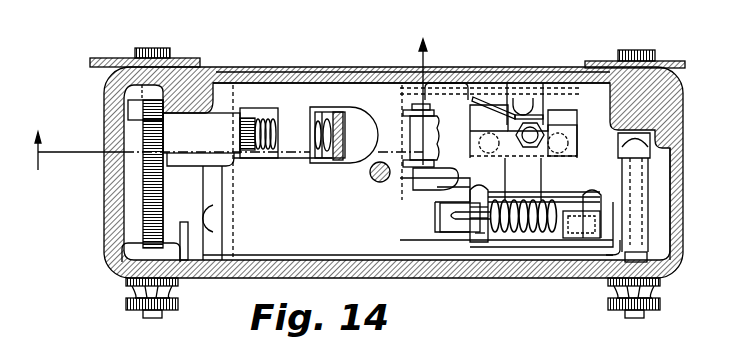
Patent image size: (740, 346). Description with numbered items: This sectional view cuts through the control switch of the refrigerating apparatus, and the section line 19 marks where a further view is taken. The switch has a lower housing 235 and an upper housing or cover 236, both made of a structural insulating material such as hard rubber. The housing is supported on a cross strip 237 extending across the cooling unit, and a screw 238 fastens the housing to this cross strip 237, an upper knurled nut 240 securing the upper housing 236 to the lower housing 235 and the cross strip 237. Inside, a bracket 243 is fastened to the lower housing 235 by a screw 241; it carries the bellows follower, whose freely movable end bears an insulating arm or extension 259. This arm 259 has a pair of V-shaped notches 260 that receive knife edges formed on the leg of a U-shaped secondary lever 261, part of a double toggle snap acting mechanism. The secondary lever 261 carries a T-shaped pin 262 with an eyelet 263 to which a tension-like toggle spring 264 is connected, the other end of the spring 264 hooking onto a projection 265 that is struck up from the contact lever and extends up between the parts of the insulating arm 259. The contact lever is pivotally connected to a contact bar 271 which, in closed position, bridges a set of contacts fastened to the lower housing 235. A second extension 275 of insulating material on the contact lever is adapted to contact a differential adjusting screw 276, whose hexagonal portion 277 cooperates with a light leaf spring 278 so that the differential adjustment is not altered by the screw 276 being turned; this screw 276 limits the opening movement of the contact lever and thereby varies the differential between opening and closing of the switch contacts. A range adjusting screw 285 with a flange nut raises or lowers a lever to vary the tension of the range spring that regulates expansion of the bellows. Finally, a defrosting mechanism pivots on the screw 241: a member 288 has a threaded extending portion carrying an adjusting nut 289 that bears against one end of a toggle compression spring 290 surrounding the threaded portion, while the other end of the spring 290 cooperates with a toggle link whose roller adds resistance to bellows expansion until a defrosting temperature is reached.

The section line 19- 19 is at (235, 92).
The lower housing 235 is at (683, 117).
The upper housing or cover 236 is at (683, 210).
The cross strip 237 is at (128, 58).
The screw 238 is at (147, 203).
The upper knurled nut 240 is at (125, 303).
The screw 241 is at (188, 172).
The bracket 243 is at (265, 93).
The insulating arm 259 is at (426, 240).
The V-shaped notches 260 is at (480, 235).
The U-shaped secondary lever 261 is at (567, 192).
The T-shaped pin 262 is at (605, 207).
The eyelet 263 is at (590, 205).
The toggle spring 264 is at (530, 227).
The projection 265 is at (453, 215).
The contact bar 271 is at (572, 133).
The second extension 275 is at (518, 168).
The differential adjusting screw 276 is at (532, 130).
The hexagonal portion 277 is at (527, 123).
The light leaf spring 278 is at (510, 120).
The adjusting screw 285 is at (373, 175).
The member 288 is at (213, 127).
The adjusting nut 289 is at (247, 127).
The toggle compression spring 290 is at (323, 127).